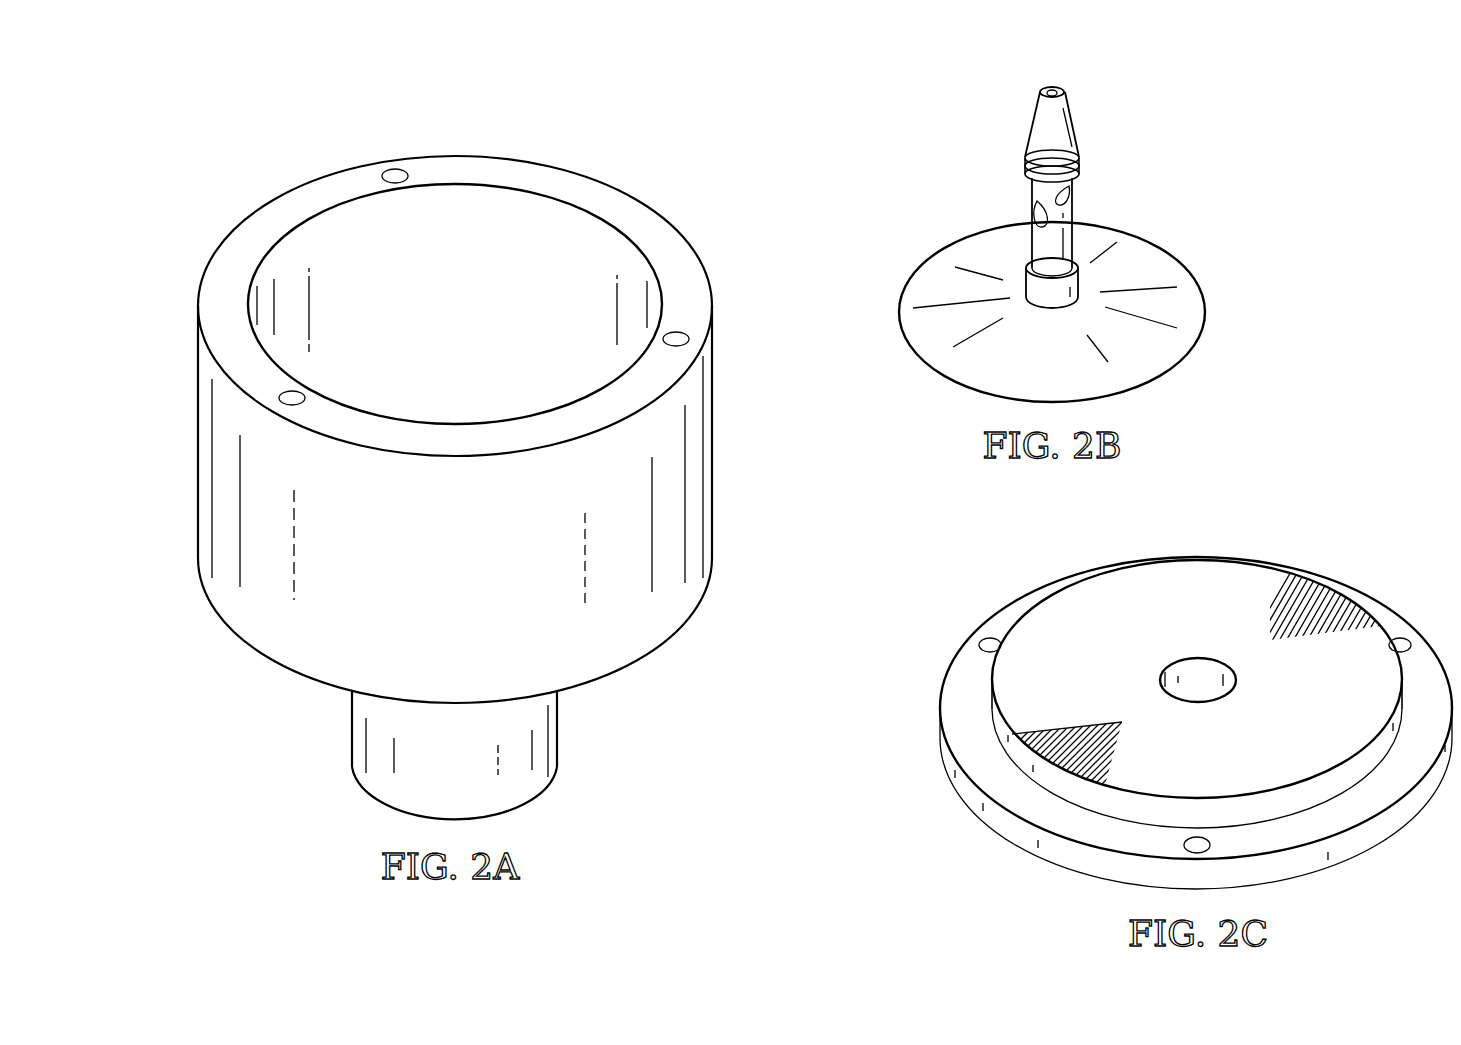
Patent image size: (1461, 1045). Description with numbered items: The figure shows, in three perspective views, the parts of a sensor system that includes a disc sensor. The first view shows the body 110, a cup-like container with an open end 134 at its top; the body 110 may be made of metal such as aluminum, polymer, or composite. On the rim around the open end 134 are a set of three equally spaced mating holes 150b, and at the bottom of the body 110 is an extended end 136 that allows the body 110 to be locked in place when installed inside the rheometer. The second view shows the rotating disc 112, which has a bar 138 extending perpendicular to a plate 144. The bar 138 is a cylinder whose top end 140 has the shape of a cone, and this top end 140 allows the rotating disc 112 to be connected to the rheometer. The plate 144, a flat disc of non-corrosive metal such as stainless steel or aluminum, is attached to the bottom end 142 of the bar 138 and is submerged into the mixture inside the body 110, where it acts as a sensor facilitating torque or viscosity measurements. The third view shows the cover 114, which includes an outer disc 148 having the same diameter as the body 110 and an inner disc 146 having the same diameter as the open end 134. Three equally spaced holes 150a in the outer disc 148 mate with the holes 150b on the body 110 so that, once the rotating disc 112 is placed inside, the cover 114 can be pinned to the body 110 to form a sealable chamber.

In FIG. 2A, the body 110 is at (199, 432).
In FIG. 2A, the open end 134 is at (497, 222).
In FIG. 2A, the mating holes 150b is at (395, 172).
In FIG. 2A, the extended end 136 is at (360, 728).
In FIG. 2B, the rotating disc 112 is at (1091, 214).
In FIG. 2B, the bar 138 is at (1032, 122).
In FIG. 2B, the top end 140 is at (1052, 88).
In FIG. 2B, the bottom end 142 is at (1052, 311).
In FIG. 2B, the plate 144 is at (1207, 308).
In FIG. 2C, the cover 114 is at (1198, 690).
In FIG. 2C, the inner disc 146 is at (1017, 652).
In FIG. 2C, the outer disc 148 is at (1375, 850).
In FIG. 2C, the holes 150a is at (1404, 638).